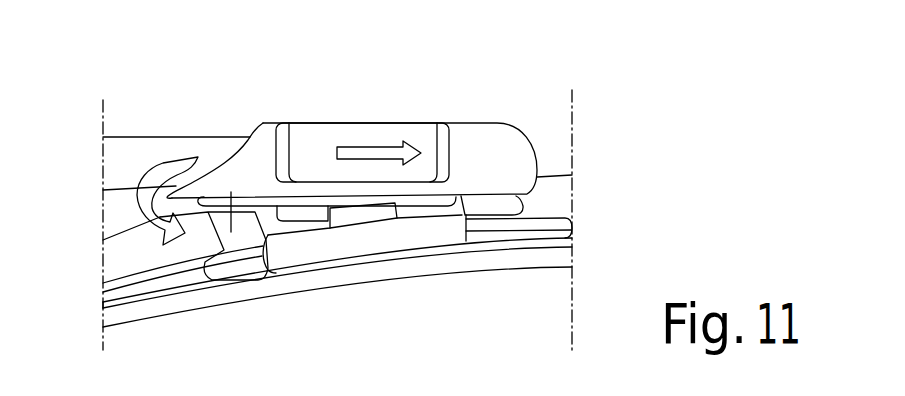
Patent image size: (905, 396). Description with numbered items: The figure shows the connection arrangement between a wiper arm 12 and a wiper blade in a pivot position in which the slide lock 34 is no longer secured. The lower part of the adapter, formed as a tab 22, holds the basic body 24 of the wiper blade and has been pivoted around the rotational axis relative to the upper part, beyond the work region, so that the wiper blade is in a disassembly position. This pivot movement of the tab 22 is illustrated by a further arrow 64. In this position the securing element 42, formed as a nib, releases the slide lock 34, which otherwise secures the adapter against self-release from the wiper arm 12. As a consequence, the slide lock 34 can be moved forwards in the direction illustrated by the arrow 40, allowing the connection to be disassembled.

The wiper arm 12 is at (200, 113).
The tab 22 is at (372, 243).
The basic body 24 is at (551, 153).
The slide lock 34 is at (465, 153).
The arrow 40 is at (373, 154).
The securing element 42 is at (231, 192).
The further arrow 64 is at (163, 163).